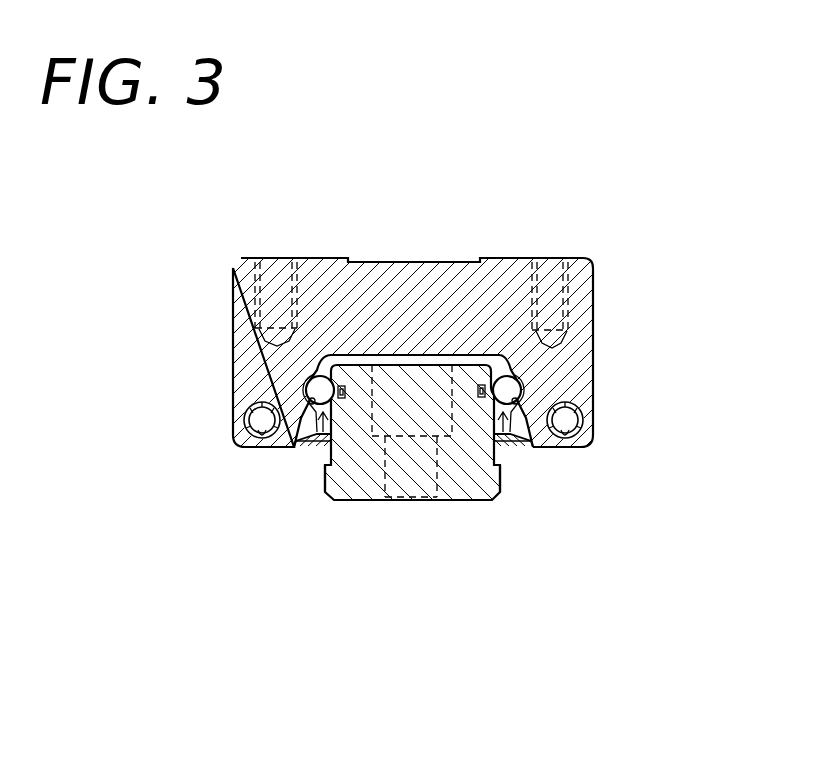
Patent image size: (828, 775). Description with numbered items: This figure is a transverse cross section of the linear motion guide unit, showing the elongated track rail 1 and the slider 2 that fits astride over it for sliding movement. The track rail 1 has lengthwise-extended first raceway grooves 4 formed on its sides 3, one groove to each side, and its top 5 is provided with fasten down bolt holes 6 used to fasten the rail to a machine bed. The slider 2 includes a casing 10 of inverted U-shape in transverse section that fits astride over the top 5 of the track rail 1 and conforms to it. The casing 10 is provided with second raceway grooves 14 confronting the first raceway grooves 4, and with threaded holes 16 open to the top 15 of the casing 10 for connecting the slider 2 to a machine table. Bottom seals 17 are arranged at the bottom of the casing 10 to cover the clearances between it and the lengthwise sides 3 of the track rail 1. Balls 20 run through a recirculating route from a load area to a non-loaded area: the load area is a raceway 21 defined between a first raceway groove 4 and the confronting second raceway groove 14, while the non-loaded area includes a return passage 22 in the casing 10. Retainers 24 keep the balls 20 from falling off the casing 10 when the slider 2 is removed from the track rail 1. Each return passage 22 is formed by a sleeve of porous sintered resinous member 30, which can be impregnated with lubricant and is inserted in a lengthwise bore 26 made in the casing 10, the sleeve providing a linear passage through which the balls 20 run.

The track rail 1 is at (415, 485).
The slider 2 is at (409, 318).
The sides of track rail 3 is at (504, 494).
The first raceway grooves 4 is at (520, 381).
The top of track rail 5 is at (363, 357).
The fasten down bolt holes 6 is at (409, 506).
The casing 10 is at (425, 300).
The second raceway grooves 14 is at (516, 437).
The top of casing 15 is at (328, 258).
The threaded holes 16 is at (552, 277).
The bottom seals 17 is at (512, 452).
The balls 20 is at (510, 392).
The raceway 21 is at (506, 452).
The return passage 22 is at (590, 428).
The retainers 24 is at (483, 398).
The lengthwise bores 26 is at (568, 423).
The sintered resinous member 30 is at (594, 409).